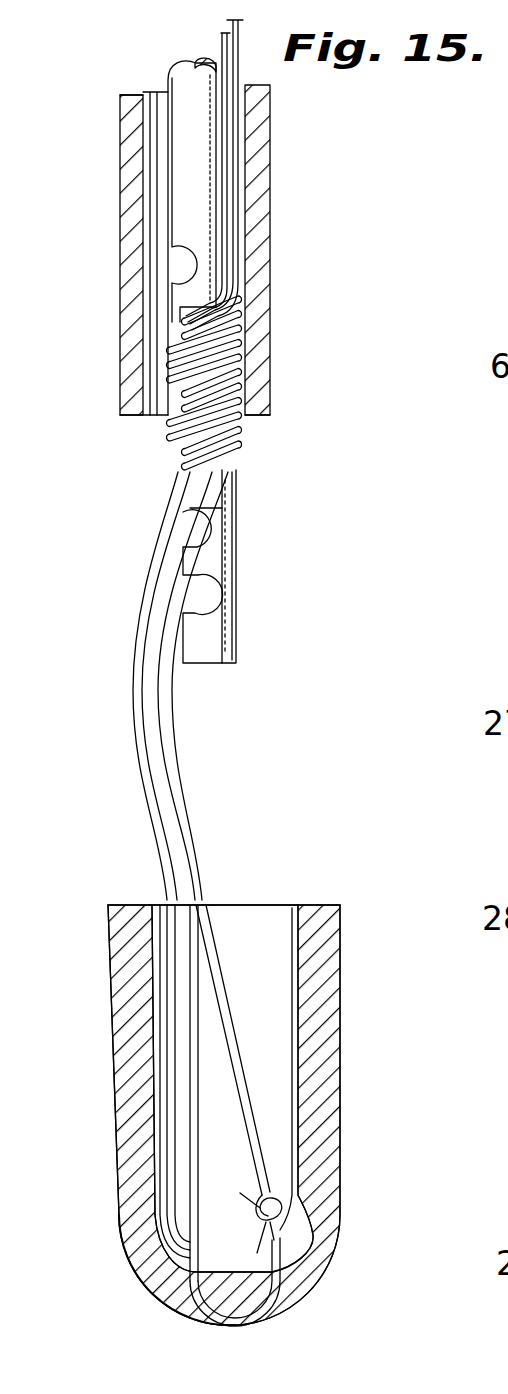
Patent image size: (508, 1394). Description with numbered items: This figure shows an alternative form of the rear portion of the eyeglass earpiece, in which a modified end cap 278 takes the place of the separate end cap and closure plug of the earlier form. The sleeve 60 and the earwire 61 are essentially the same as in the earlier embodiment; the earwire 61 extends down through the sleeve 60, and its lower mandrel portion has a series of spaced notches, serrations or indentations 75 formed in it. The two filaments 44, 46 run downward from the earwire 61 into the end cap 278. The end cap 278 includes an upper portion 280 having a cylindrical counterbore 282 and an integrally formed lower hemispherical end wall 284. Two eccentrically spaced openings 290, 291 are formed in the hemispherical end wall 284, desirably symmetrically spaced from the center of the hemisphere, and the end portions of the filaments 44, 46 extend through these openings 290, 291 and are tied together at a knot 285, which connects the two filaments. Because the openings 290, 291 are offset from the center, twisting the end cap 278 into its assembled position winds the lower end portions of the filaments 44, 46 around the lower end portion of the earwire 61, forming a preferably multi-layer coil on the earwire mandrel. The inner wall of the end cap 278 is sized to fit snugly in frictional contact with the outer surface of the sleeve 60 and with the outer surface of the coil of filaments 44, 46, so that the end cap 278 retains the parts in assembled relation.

The sleeve 60 is at (133, 190).
The earwire 61 is at (197, 199).
The notches 75 is at (205, 582).
The upper filament 44 is at (140, 581).
The filament 46 is at (183, 770).
The end cap 278 is at (116, 893).
The upper portion 280 is at (133, 990).
The cylindrical counterbore 282 is at (310, 1018).
The hemispherical end wall 284 is at (160, 1276).
The knot 285 is at (278, 1210).
The opening 290 is at (195, 1300).
The opening 291 is at (279, 1290).